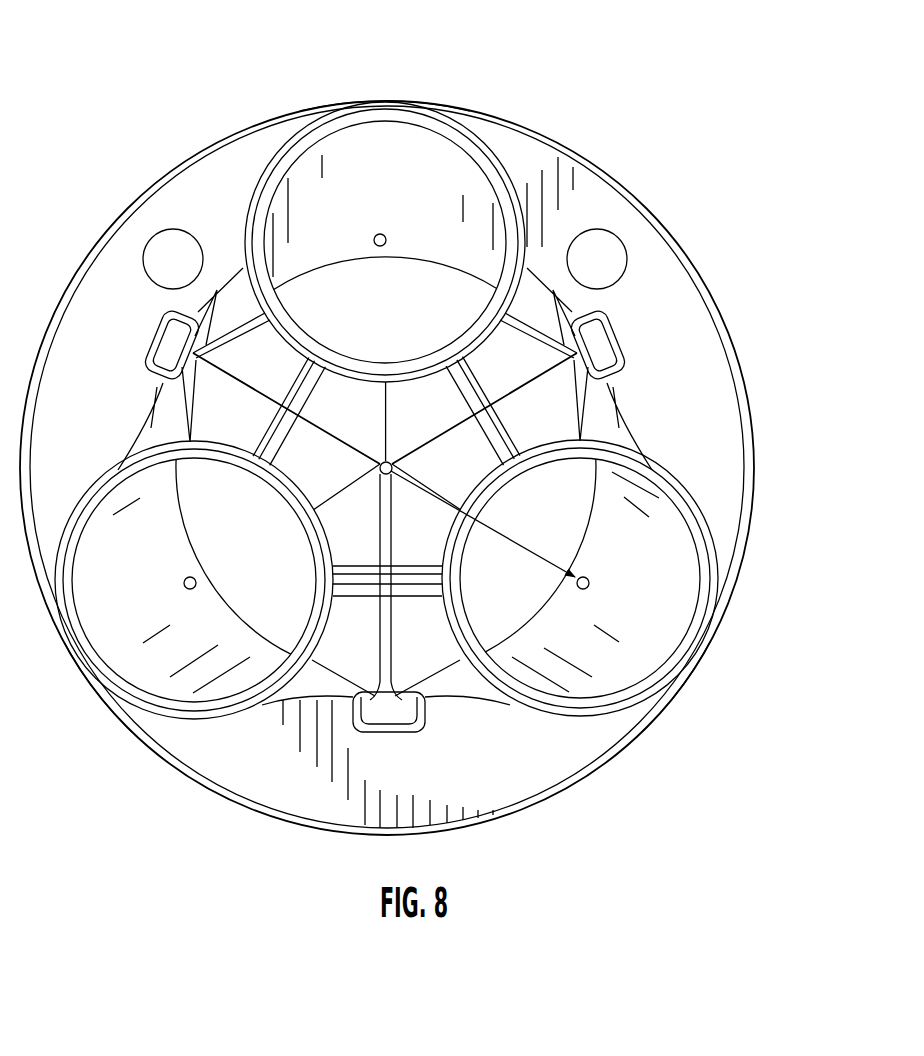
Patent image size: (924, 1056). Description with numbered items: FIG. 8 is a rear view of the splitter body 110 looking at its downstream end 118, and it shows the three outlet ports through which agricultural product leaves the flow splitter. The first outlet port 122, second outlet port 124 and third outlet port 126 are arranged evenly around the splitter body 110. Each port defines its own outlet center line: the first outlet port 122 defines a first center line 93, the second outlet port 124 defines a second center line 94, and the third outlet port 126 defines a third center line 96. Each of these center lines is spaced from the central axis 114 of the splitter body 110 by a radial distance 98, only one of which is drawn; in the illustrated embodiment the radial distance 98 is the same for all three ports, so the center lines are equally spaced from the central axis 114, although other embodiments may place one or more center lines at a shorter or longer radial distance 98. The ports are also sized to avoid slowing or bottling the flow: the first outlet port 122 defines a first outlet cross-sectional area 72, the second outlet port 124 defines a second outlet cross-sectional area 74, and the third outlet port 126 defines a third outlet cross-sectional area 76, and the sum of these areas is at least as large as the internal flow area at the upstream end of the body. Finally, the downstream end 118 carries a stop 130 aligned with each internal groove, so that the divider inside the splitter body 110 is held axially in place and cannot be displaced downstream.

The splitter body 110 is at (112, 75).
The downstream end 118 is at (699, 148).
The first outlet port 122 is at (338, 99).
The second outlet port 124 is at (714, 694).
The third outlet port 126 is at (67, 684).
The first outlet cross-sectional area 72 is at (413, 156).
The second outlet cross-sectional area 74 is at (684, 614).
The third outlet cross-sectional area 76 is at (157, 656).
The first center line 93 is at (381, 247).
The second center line 94 is at (578, 585).
The third center line 96 is at (197, 581).
The radial distance 98 is at (510, 536).
The central axis 114 is at (395, 475).
The stop 130 is at (157, 339).